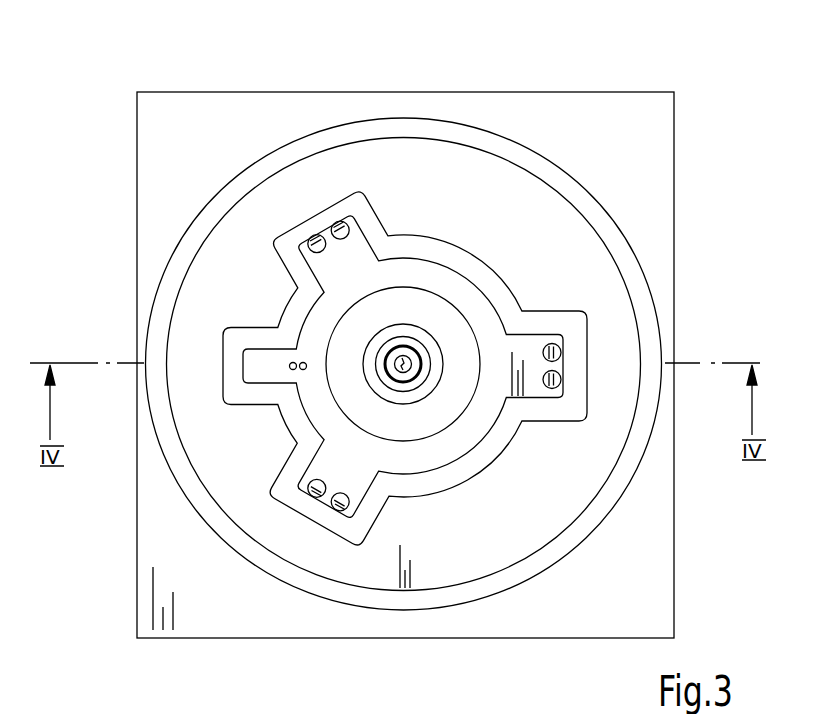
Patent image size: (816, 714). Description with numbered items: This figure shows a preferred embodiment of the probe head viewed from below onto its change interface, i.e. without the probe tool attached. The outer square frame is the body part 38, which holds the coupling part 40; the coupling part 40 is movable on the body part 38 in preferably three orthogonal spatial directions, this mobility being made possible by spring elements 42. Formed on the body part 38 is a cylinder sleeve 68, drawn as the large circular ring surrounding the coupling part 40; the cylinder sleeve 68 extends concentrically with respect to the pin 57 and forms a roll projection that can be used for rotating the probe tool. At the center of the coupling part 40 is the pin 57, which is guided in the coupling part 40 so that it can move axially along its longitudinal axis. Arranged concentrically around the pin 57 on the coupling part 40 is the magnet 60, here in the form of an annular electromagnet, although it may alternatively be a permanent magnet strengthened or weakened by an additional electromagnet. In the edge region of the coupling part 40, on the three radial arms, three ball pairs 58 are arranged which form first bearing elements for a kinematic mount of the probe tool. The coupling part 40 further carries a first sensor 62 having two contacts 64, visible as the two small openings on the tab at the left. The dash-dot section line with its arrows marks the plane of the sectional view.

The body part 38 is at (562, 100).
The cylinder sleeve 68 is at (320, 142).
The coupling part 40 is at (482, 300).
The ball pairs 58 is at (562, 352).
The contacts 64 is at (289, 358).
The magnet 60 is at (422, 317).
The pin 57 is at (413, 374).
The spring elements 42 is at (412, 707).
The first sensor 62 is at (307, 706).